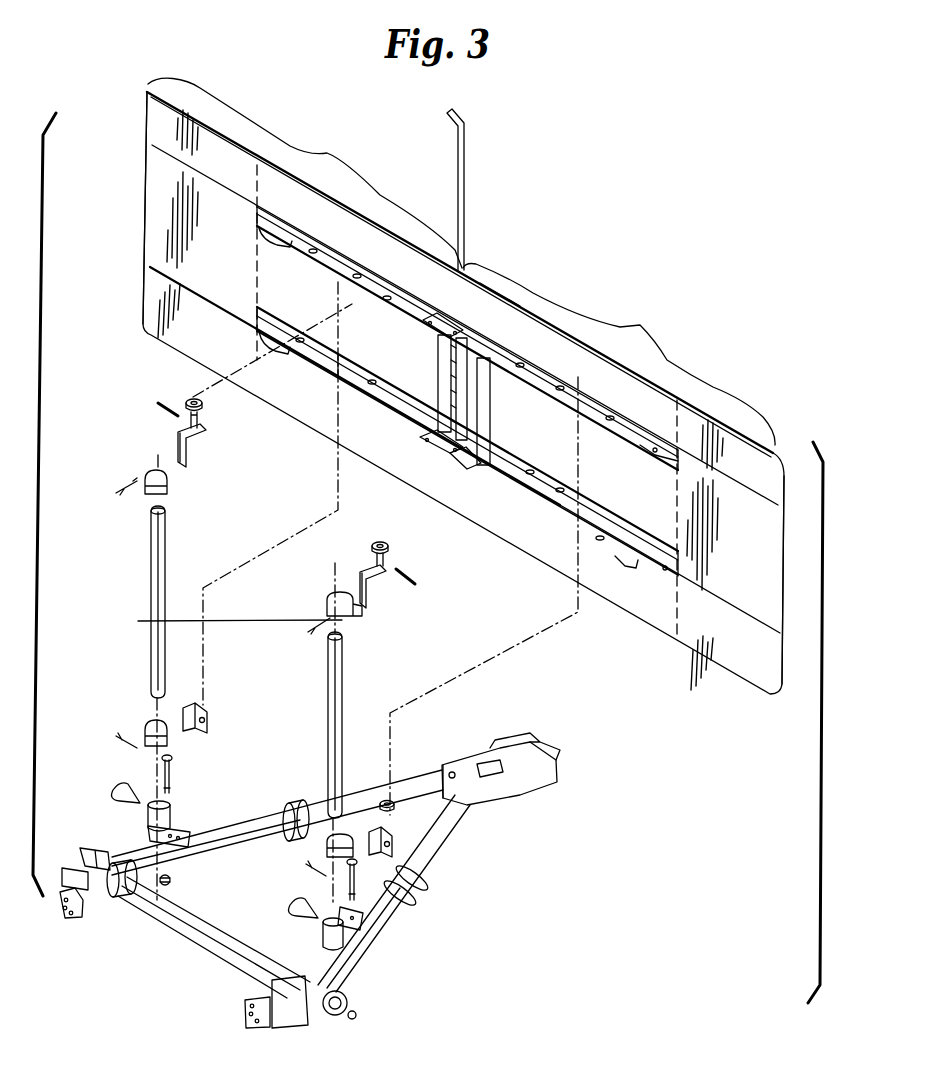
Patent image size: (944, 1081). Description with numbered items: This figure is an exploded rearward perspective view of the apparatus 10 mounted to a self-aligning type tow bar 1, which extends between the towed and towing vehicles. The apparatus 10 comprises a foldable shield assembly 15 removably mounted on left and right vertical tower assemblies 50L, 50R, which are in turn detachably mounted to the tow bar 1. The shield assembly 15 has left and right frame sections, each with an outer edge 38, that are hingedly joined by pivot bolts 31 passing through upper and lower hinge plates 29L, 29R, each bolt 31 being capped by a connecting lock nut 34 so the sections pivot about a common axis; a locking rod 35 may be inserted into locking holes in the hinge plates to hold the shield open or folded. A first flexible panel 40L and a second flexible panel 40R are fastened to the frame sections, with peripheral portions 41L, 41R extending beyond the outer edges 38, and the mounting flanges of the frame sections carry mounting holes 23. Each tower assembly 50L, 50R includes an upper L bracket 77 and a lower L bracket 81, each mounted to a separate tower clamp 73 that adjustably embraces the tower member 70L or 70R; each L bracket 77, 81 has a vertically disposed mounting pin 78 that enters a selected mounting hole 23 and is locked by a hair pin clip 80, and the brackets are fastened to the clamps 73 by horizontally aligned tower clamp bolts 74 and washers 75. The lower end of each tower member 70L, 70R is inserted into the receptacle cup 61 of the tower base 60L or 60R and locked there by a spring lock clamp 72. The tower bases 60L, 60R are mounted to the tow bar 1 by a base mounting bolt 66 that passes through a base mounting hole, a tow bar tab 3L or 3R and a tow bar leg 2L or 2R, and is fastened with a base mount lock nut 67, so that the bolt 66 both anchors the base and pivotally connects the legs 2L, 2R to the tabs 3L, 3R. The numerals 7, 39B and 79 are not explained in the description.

The tow bar 1 is at (186, 942).
The left tow bar leg 2L is at (240, 832).
The right tow bar leg 2R is at (390, 922).
The left tow bar tab 3L is at (128, 853).
The right tow bar tab 3R is at (360, 972).
The hitch plate 7 is at (550, 752).
The apparatus 10 is at (588, 168).
The shield assembly 15 is at (493, 290).
The mounting holes 23 is at (340, 264).
The left hinge plate 29L is at (422, 437).
The right hinge plate 29R is at (455, 462).
The pivot bolt 31 is at (430, 443).
The connecting lock nut 34 is at (450, 443).
The locking rod 35 is at (464, 174).
The outer edge 38 is at (233, 268).
The direction arrow 39B is at (298, 272).
The first flexible panel 40L is at (305, 173).
The second flexible panel 40R is at (619, 355).
The peripheral portion of left panel 41L is at (170, 178).
The peripheral portion of right panel 41R is at (765, 598).
The left tower assembly 50L is at (128, 665).
The right tower assembly 50R is at (360, 762).
The left tower base 60L is at (128, 820).
The right tower base 60R is at (318, 958).
The receptacle cup 61 is at (175, 815).
The base mounting bolt 66 is at (172, 762).
The base mount lock nut 67 is at (163, 890).
The left tower member 70L is at (160, 558).
The right tower member 70R is at (345, 680).
The spring lock clamp 72 is at (140, 786).
The tower clamp 73 is at (165, 492).
The tower clamp bolt 74 is at (125, 490).
The washer 75 is at (133, 480).
The upper L bracket 77 is at (170, 442).
The mounting pin 78 is at (198, 428).
The washer 79 is at (190, 398).
The hair pin clip 80 is at (160, 406).
The lower L bracket 81 is at (210, 732).